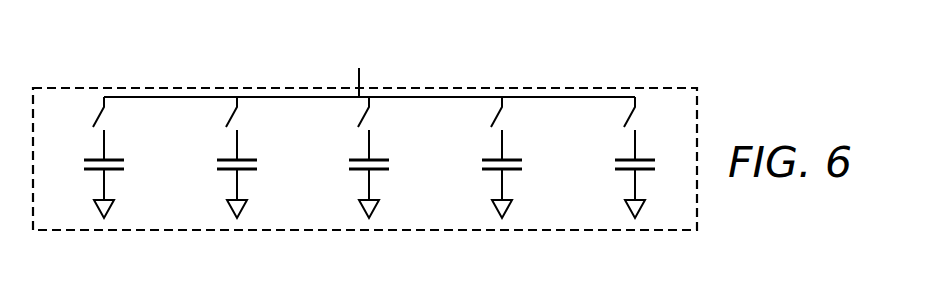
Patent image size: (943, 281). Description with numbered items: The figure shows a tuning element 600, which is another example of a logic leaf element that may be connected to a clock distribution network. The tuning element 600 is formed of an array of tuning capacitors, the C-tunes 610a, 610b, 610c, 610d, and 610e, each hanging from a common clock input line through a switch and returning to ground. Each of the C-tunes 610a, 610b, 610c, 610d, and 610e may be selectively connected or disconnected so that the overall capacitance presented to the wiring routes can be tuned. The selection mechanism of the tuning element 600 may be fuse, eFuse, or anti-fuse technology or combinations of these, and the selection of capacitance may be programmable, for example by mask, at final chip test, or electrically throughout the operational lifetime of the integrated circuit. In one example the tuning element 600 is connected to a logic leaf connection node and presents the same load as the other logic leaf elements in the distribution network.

The tuning element 600 is at (186, 73).
The C-tune 610a is at (110, 171).
The C-tune 610b is at (243, 171).
The C-tune 610c is at (375, 171).
The C-tune 610d is at (508, 171).
The C-tune 610e is at (620, 159).